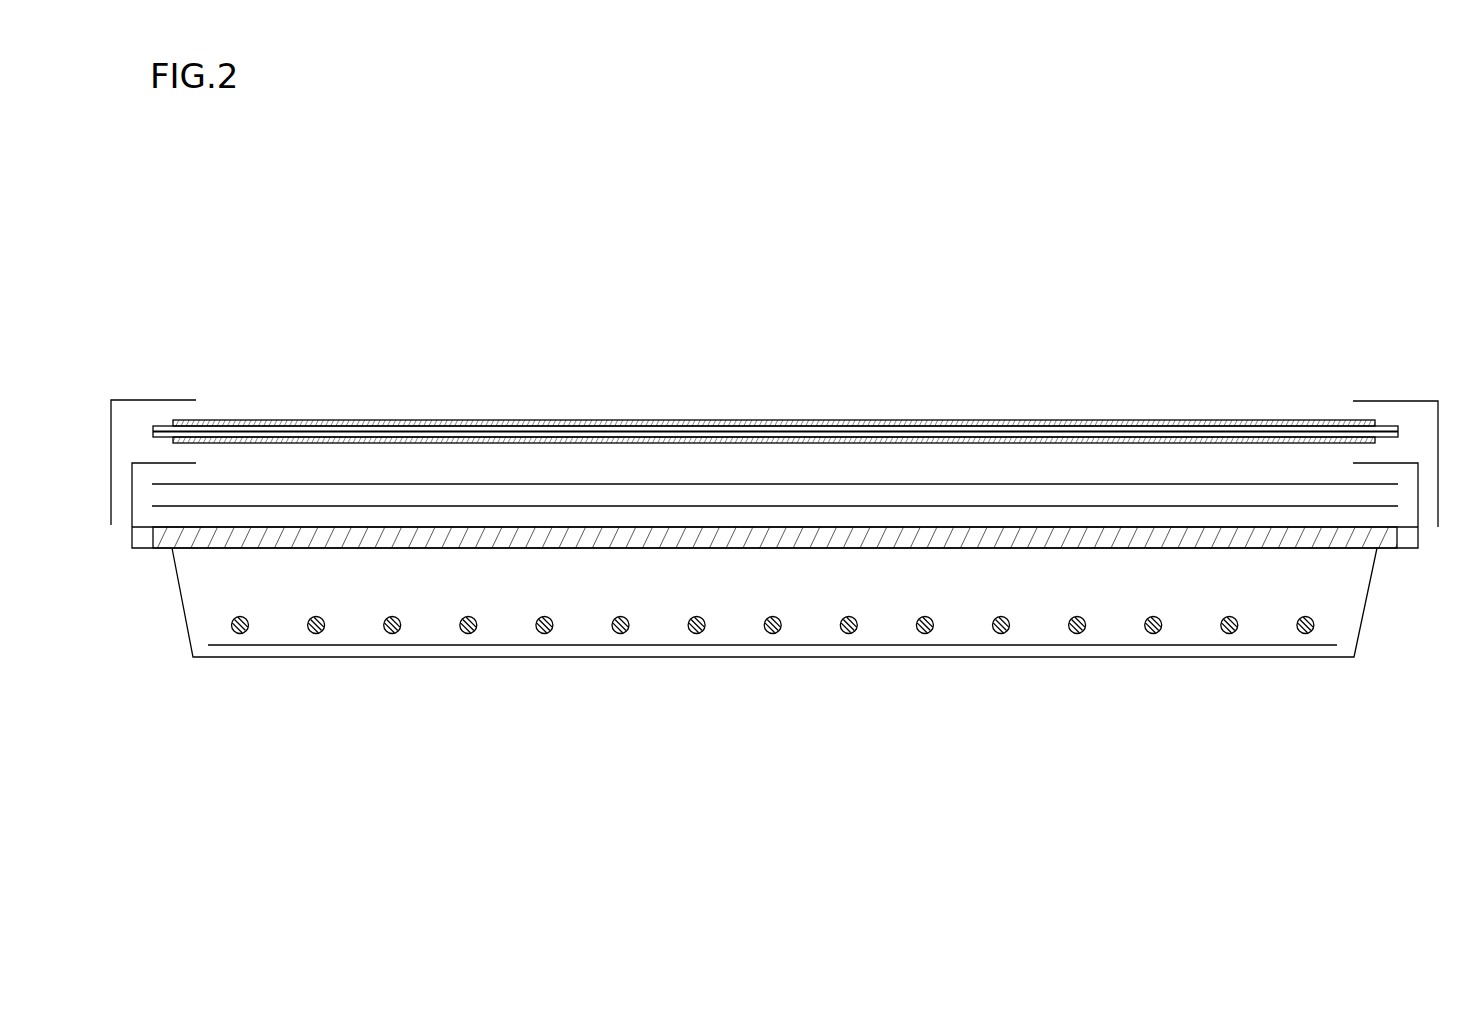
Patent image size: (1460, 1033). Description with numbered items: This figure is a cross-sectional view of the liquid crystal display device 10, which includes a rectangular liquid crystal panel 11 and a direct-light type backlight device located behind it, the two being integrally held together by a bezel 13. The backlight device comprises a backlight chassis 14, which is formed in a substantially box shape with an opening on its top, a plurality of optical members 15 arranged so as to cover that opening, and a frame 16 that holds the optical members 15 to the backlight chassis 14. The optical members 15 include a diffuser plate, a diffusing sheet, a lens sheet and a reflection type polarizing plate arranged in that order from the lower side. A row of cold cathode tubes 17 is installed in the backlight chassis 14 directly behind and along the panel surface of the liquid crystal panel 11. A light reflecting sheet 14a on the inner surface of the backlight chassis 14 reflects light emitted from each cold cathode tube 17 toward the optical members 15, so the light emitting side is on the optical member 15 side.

The liquid crystal display device 10 is at (615, 339).
The liquid crystal panel 11 is at (460, 420).
The bezel 13 is at (160, 398).
The backlight chassis 14 is at (178, 592).
The light reflecting sheet 14a is at (1173, 644).
The optical members 15 is at (752, 527).
The frame 16 is at (142, 462).
The cold cathode tubes 17 is at (392, 616).